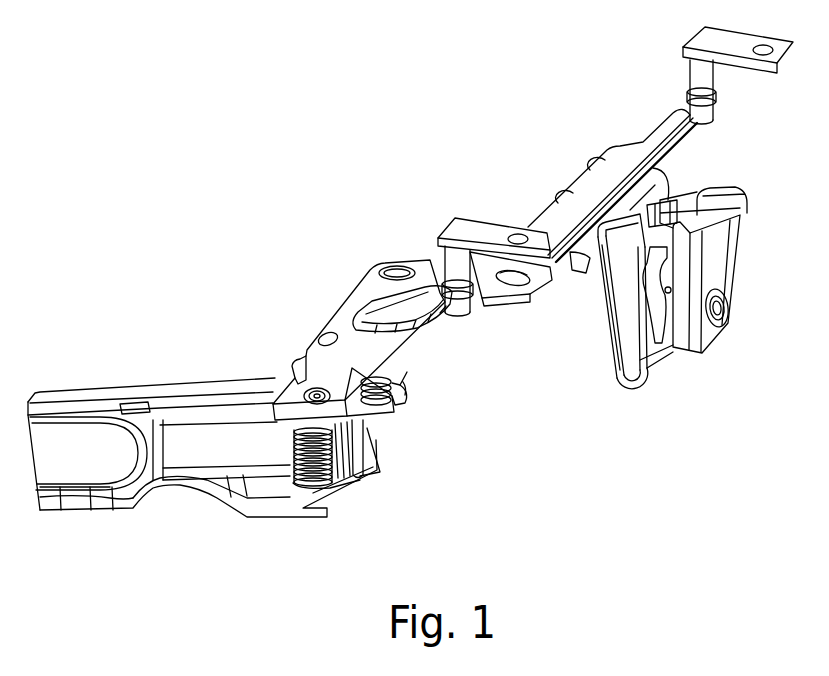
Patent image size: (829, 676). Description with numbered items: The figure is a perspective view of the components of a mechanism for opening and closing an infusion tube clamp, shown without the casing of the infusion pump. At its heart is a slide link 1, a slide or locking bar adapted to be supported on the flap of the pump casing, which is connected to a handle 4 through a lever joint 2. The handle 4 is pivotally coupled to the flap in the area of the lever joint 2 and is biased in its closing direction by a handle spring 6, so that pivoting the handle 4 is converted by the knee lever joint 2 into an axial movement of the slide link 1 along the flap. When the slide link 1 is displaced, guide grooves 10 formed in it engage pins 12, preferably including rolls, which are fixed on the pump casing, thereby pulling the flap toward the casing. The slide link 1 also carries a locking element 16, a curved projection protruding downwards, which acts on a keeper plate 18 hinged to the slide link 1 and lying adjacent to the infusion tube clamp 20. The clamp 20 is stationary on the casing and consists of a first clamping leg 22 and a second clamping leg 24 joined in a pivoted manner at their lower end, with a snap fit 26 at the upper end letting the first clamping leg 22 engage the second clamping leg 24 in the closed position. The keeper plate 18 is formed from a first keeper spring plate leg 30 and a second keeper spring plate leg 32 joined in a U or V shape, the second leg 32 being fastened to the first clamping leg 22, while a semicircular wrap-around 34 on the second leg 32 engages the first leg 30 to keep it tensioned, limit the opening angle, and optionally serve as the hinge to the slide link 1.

The slide link 1 is at (350, 312).
The lever joint 2 is at (399, 400).
The handle 4 is at (185, 388).
The handle spring 6 is at (327, 490).
The guide grooves 10 is at (663, 127).
The pins 12 is at (453, 272).
The locking element 16 is at (538, 229).
The keeper plate 18 is at (650, 370).
The infusion tube clamp 20 is at (687, 360).
The first clamping leg 22 is at (647, 205).
The second clamping leg 24 is at (713, 207).
The snap fit 26 is at (693, 213).
The first keeper spring plate leg 30 is at (627, 312).
The second keeper spring plate leg 32 is at (620, 338).
The wrap-around 34 is at (537, 228).